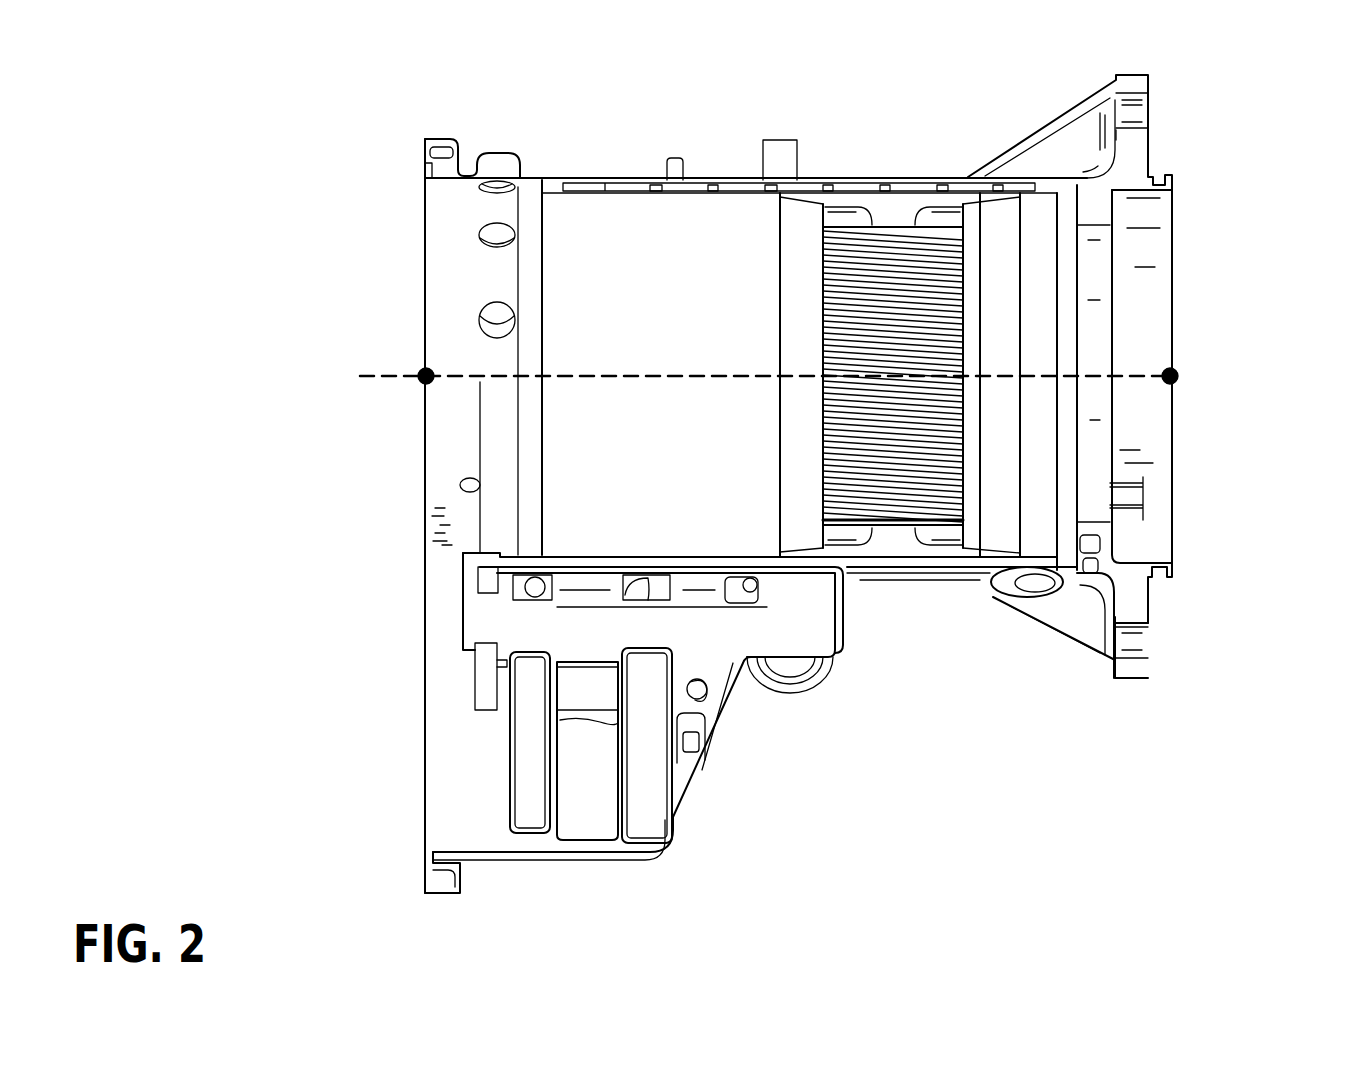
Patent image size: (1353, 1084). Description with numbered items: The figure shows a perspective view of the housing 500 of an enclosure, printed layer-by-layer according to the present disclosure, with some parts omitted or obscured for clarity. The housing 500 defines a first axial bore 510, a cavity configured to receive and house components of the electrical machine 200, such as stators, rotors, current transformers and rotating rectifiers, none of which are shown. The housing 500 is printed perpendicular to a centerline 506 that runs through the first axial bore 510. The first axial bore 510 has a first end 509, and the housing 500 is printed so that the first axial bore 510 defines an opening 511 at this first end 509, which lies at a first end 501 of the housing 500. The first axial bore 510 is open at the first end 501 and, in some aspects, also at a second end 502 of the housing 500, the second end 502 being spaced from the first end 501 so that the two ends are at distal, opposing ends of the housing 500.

The electrical machine 200 is at (318, 88).
The housing 500 is at (1043, 130).
The first end of the housing 501 is at (378, 526).
The second end of the housing 502 is at (1235, 542).
The centerline 506 is at (705, 378).
The first end of the first axial bore 509 is at (340, 352).
The first axial bore 510 is at (428, 228).
The opening 511 is at (385, 340).